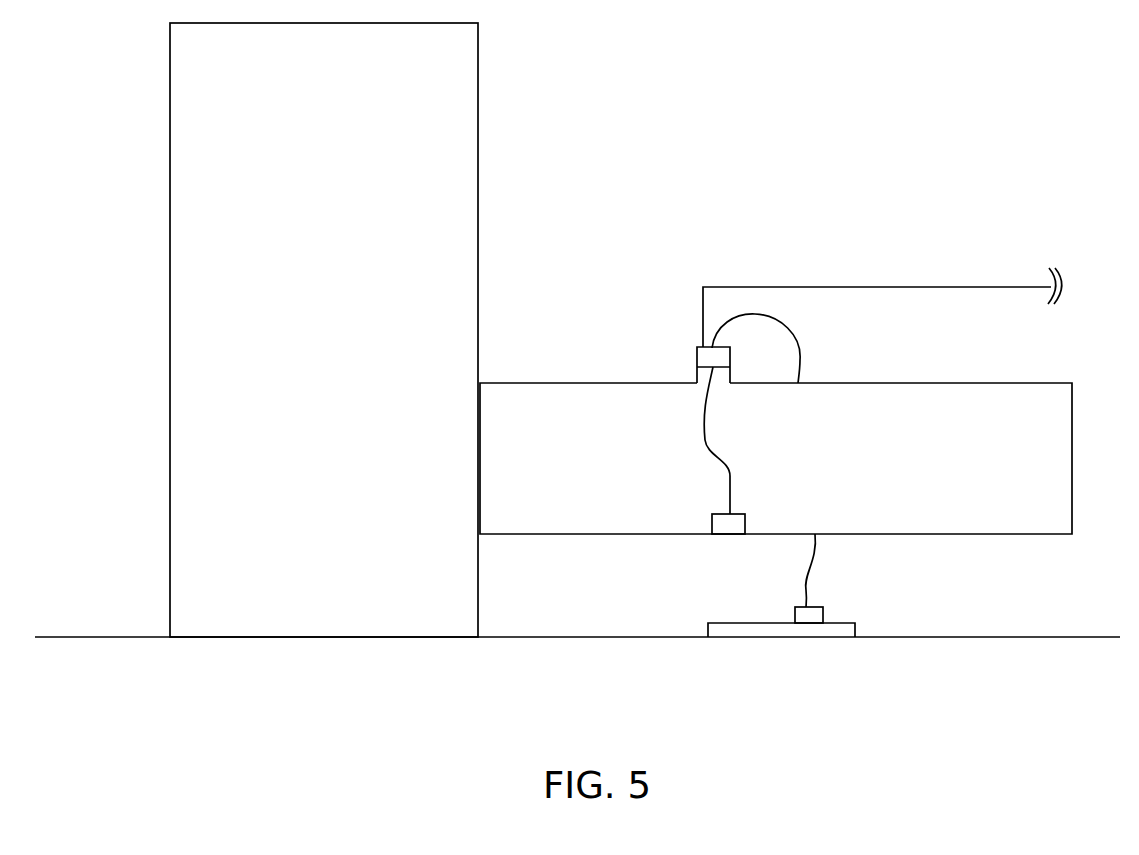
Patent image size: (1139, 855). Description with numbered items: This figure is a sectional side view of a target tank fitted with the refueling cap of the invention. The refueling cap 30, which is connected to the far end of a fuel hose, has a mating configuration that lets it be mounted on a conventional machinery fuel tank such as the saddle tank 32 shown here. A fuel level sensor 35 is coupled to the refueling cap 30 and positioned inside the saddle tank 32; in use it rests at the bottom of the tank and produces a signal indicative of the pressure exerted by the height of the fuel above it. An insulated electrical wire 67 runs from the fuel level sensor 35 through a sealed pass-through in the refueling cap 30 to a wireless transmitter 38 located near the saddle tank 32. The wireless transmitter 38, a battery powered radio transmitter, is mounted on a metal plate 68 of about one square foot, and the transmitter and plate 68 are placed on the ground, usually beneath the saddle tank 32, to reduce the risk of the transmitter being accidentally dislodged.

The refueling cap 30 is at (697, 357).
The saddle tank 32 is at (1072, 461).
The fuel level sensor 35 is at (747, 523).
The wireless transmitter 38 is at (795, 617).
The insulated electrical wire 67 is at (802, 353).
The metal plate 68 is at (857, 630).